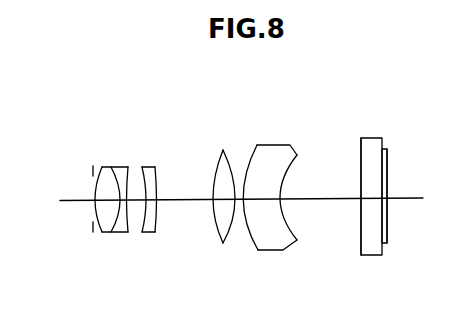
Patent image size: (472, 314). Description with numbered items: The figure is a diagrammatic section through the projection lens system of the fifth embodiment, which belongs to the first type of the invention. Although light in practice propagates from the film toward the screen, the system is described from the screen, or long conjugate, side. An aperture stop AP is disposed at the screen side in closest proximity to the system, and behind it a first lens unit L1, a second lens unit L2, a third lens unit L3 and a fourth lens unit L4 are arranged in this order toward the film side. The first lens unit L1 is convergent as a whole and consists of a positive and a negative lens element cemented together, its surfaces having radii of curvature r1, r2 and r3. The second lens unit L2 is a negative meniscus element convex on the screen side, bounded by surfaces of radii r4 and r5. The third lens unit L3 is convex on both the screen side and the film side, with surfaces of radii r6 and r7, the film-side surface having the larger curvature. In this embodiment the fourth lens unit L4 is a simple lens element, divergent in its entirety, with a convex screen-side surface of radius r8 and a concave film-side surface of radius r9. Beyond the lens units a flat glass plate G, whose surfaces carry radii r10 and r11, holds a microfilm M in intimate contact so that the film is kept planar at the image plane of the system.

The radius of curvature of first lens surface r1 is at (95, 186).
The radius of curvature of second lens surface r2 is at (112, 167).
The radius of curvature of third lens surface r3 is at (130, 166).
The radius of curvature of fourth lens surface r4 is at (145, 168).
The radius of curvature of fifth lens surface r5 is at (156, 170).
The radius of curvature of sixth lens surface r6 is at (214, 168).
The radius of curvature of seventh lens surface r7 is at (233, 168).
The radius of curvature of eighth lens surface r8 is at (253, 148).
The radius of curvature of ninth lens surface r9 is at (290, 160).
The radius of curvature of tenth surface r10 is at (361, 151).
The radius of curvature of eleventh surface r11 is at (384, 149).
The aperture stop AP is at (93, 229).
The first lens unit L1 is at (106, 209).
The second lens unit L2 is at (164, 209).
The third lens unit L3 is at (226, 209).
The fourth lens unit L4 is at (284, 209).
The flat glass plate G is at (369, 205).
The microfilm M is at (408, 194).